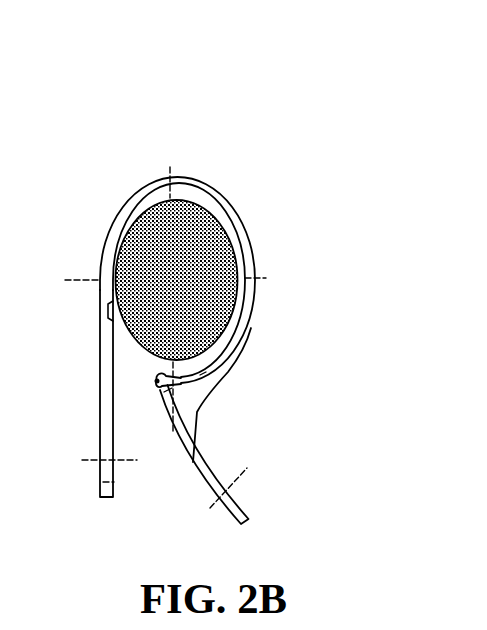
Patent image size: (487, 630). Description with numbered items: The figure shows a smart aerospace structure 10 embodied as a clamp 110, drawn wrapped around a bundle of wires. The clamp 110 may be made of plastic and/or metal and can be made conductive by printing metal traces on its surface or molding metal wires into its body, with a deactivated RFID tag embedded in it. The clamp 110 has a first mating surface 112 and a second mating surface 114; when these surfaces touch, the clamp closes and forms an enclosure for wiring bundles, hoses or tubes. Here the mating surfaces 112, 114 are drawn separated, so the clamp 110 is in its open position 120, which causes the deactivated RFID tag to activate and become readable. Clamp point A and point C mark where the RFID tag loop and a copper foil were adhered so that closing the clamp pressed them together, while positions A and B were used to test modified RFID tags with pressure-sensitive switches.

The smart aerospace structure 10 is at (327, 141).
The clamp 110 is at (189, 156).
The first mating surface 112 is at (114, 402).
The second mating surface 114 is at (195, 439).
The open position 120 is at (100, 519).
The clamp point A is at (162, 411).
The clamp position B is at (203, 377).
The point C is at (127, 389).